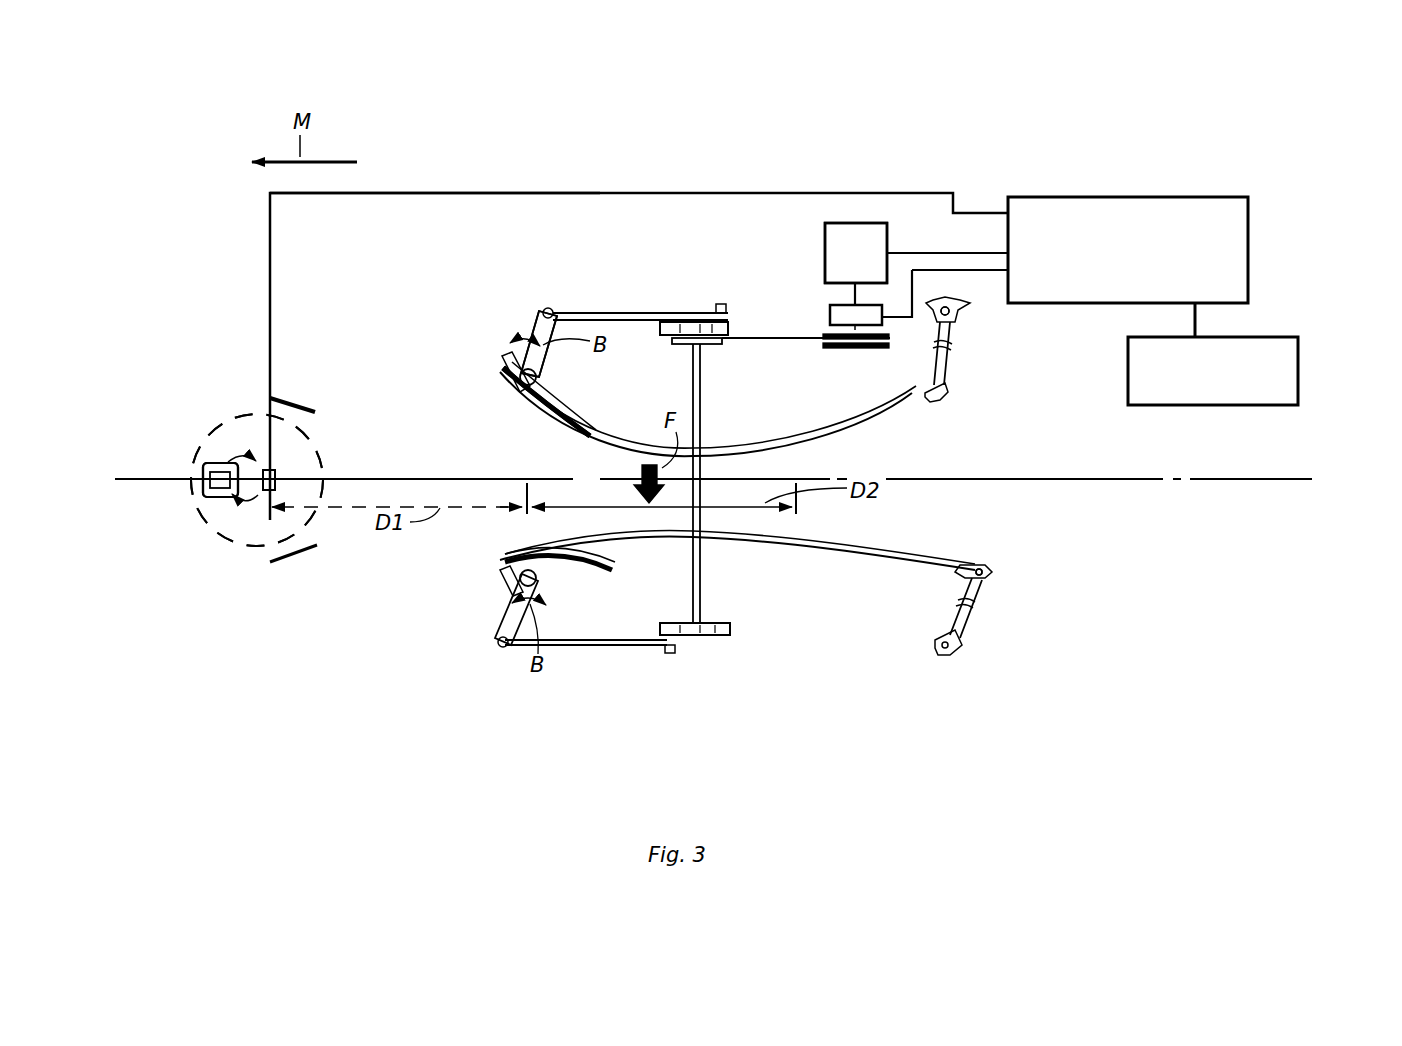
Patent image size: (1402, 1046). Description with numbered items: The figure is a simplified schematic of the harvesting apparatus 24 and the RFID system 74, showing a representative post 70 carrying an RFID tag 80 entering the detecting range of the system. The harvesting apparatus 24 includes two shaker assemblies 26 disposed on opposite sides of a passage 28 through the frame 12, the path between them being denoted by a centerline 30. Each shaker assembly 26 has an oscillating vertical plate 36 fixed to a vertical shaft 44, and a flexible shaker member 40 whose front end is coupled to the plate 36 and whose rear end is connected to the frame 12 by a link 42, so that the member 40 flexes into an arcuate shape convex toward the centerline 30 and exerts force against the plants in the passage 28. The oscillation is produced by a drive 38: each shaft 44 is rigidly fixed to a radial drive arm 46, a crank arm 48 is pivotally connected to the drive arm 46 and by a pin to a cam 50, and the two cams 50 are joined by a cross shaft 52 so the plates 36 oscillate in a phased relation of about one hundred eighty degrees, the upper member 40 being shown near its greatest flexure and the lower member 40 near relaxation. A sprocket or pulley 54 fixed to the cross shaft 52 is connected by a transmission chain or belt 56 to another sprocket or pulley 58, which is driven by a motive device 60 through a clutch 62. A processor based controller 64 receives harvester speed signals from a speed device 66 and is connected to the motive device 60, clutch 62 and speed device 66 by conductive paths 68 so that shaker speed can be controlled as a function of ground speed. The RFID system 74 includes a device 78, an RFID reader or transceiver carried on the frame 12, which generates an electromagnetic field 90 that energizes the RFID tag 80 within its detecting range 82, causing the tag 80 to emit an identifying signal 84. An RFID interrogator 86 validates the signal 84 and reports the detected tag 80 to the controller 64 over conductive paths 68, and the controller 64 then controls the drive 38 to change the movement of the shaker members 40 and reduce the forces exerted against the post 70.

The frame 12 is at (304, 403).
The harvesting apparatus 24 is at (516, 328).
The shaker assembly 26 is at (946, 372).
The passage 28 is at (997, 508).
The centerline 30 is at (1210, 478).
The oscillating vertical plate 36 is at (505, 352).
The drive 38 is at (858, 221).
The shaker member 40 is at (750, 437).
The link 42 is at (945, 360).
The vertical shaft 44 is at (545, 378).
The radial drive arm 46 is at (548, 305).
The crank arm 48 is at (645, 312).
The cam 50 is at (730, 325).
The cross shaft 52 is at (700, 578).
The sprocket or pulley 54 is at (668, 345).
The transmission chain or belt 56 is at (806, 345).
The sprocket or pulley 58 is at (880, 350).
The motive device 60 is at (888, 236).
The clutch 62 is at (830, 318).
The processor based controller 64 is at (1109, 196).
The speed device 66 is at (1298, 386).
The conductive path 68 is at (675, 190).
The post 70 is at (220, 500).
The RFID system 74 is at (535, 184).
The RFID reader or transceiver device 78 is at (278, 470).
The RFID tag 80 is at (210, 466).
The RFID tag detecting range 82 is at (320, 442).
The identifying signal 84 is at (256, 460).
The RFID interrogator 86 is at (269, 480).
The electromagnetic field 90 is at (257, 480).